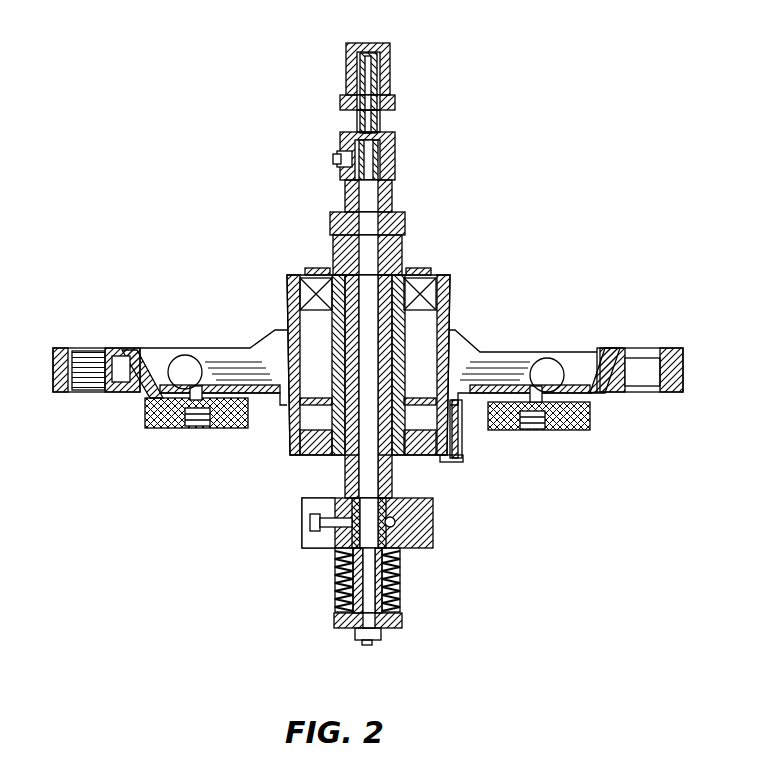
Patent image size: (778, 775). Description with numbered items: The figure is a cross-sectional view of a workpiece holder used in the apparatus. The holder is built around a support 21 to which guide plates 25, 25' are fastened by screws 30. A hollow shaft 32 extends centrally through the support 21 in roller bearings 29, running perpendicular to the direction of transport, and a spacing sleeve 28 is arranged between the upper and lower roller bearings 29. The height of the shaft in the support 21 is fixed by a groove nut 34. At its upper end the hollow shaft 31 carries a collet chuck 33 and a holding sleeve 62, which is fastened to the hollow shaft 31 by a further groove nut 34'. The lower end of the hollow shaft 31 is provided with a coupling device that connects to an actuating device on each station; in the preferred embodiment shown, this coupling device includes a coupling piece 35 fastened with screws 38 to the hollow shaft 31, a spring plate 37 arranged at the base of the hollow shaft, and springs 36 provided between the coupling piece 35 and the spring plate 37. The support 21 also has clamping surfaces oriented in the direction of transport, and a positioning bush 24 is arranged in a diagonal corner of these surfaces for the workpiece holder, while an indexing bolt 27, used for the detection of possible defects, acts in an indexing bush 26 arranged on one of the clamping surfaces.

The support 21 is at (292, 282).
The positioning bush 24 is at (645, 385).
The guide plate 25 is at (571, 400).
The guide plate 25' is at (162, 415).
The indexing bush 26 is at (112, 350).
The indexing bolt 27 is at (108, 388).
The spacing sleeve 28 is at (328, 352).
The roller bearings 29 is at (432, 292).
The screws 30 is at (538, 422).
The hollow shaft 31 is at (396, 183).
The hollow shaft 32 is at (403, 257).
The collet chuck 33 is at (392, 62).
The groove nut 34 is at (406, 209).
The groove nut 34' is at (414, 107).
The coupling piece 35 is at (434, 530).
The springs 36 is at (337, 590).
The spring plate 37 is at (336, 625).
The screws 38 is at (305, 525).
The holding sleeve 62 is at (346, 70).